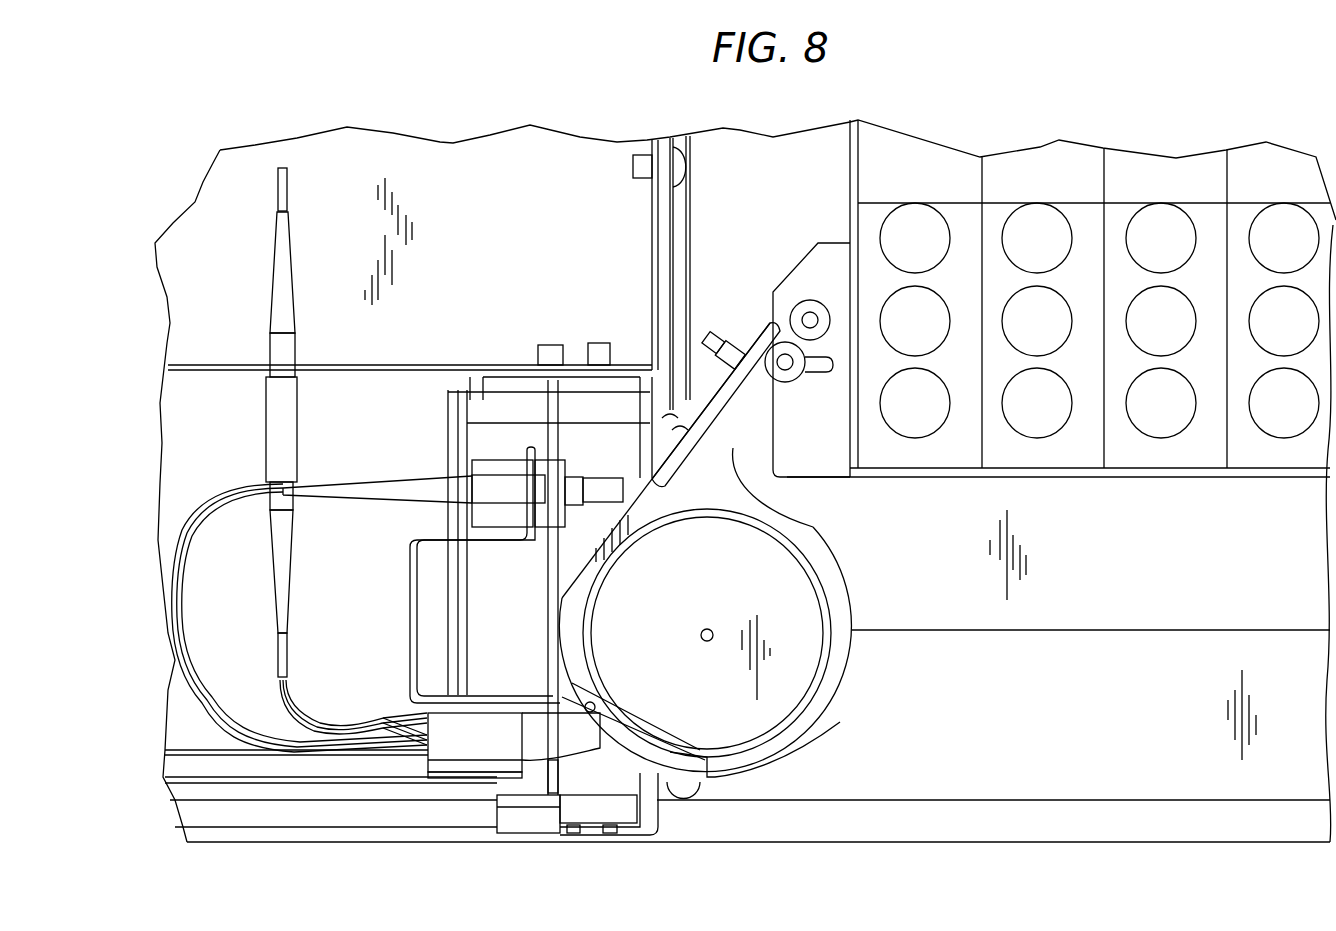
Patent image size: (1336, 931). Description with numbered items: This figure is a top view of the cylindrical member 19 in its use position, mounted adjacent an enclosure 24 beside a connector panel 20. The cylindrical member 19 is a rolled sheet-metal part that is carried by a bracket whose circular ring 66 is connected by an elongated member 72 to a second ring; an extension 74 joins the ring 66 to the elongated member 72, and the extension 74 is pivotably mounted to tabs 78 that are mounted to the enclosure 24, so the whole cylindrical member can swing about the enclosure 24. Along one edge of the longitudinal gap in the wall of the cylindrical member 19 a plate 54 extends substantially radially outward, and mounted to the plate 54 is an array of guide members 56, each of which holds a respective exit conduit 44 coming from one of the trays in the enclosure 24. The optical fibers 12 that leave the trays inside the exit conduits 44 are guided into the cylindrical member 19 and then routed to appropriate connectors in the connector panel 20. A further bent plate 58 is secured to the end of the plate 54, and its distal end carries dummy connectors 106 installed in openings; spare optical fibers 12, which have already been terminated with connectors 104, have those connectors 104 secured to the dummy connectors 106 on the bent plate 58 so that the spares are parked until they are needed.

The optical fibers 12 is at (180, 625).
The cylindrical member 19 is at (805, 723).
The connector panel 20 is at (215, 430).
The enclosure 24 is at (850, 155).
The exit conduit 44 is at (555, 742).
The plate 54 is at (427, 722).
The guide member 56 is at (470, 760).
The bent plate 58 is at (410, 612).
The circular ring 66 is at (835, 590).
The elongated member 72 is at (768, 300).
The extension 74 is at (793, 502).
The tabs 78 is at (825, 268).
The connector 104 is at (398, 483).
The dummy connector 106 is at (500, 465).